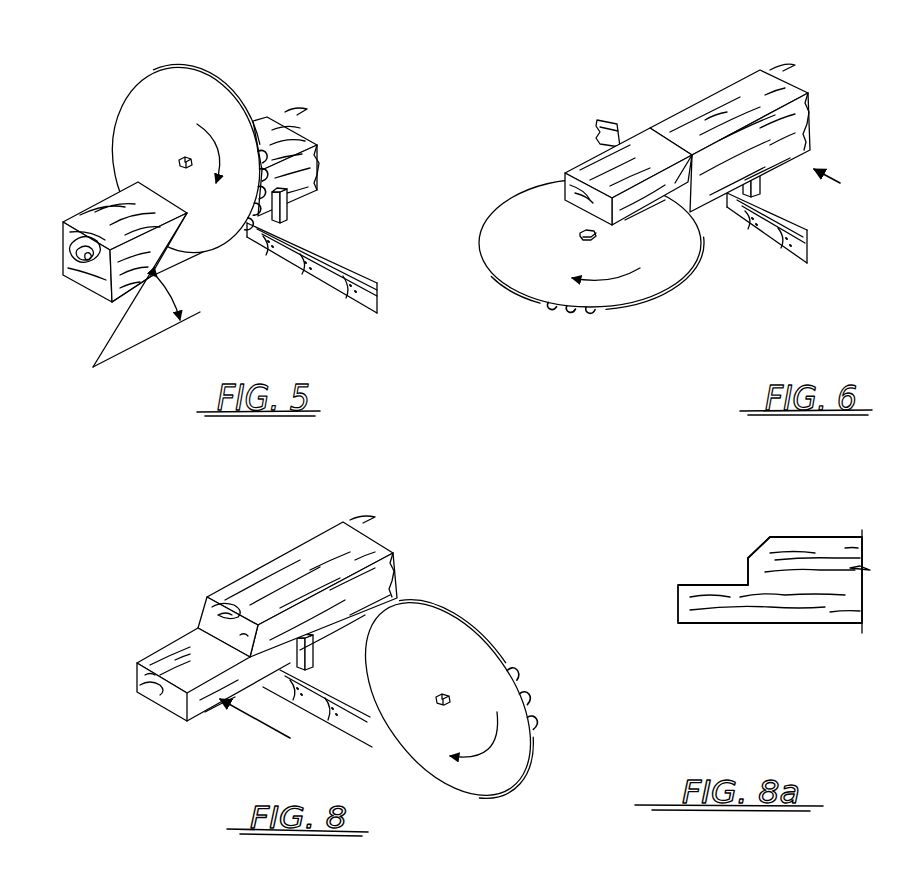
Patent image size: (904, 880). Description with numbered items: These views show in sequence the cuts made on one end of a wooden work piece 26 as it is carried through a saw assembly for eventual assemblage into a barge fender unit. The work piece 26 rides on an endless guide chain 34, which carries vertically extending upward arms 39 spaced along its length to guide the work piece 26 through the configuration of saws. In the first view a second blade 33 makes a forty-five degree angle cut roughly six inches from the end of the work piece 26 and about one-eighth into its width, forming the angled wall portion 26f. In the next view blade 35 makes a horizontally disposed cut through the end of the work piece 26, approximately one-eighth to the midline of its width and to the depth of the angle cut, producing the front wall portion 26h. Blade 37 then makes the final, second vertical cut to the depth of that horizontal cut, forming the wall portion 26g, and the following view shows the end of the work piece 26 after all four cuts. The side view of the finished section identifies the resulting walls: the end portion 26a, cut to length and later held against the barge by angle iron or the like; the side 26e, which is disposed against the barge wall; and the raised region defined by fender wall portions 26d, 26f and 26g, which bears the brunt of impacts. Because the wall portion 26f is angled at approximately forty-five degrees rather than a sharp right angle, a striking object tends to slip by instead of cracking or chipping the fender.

In FIG. 5, the work piece 26 is at (93, 210).
In FIG. 6, the work piece 26 is at (707, 100).
In FIG. 8, the work piece 26 is at (283, 560).
In FIG. 5, the second blade 33 is at (135, 93).
In FIG. 5, the endless guide chain 34 is at (300, 260).
In FIG. 6, the blade 35 is at (517, 183).
In FIG. 8, the blade 37 is at (453, 632).
In FIG. 8, the vertically extending upward arm 39 is at (313, 668).
In FIG. 8A, the wall portion 26a is at (675, 612).
In FIG. 8A, the fender wall portion 26d is at (818, 537).
In FIG. 8A, the side 26e is at (752, 630).
In FIG. 8A, the wall portion 26f is at (750, 550).
In FIG. 8A, the wall portion 26g is at (745, 573).
In FIG. 8A, the front wall portion 26h is at (688, 582).